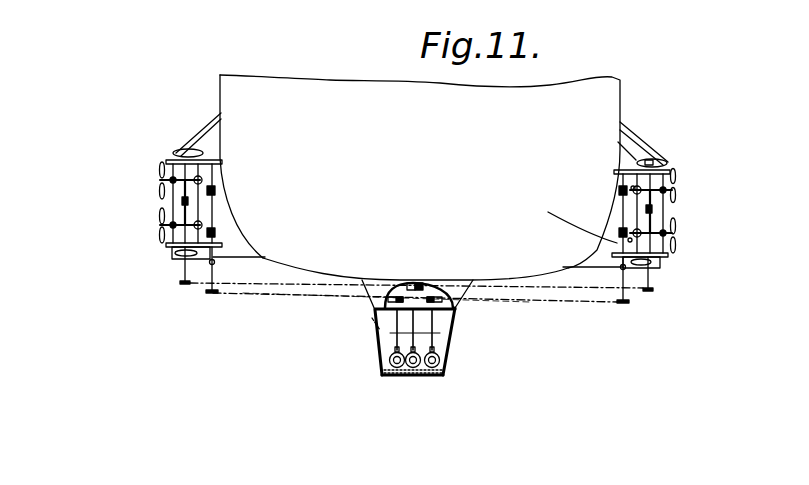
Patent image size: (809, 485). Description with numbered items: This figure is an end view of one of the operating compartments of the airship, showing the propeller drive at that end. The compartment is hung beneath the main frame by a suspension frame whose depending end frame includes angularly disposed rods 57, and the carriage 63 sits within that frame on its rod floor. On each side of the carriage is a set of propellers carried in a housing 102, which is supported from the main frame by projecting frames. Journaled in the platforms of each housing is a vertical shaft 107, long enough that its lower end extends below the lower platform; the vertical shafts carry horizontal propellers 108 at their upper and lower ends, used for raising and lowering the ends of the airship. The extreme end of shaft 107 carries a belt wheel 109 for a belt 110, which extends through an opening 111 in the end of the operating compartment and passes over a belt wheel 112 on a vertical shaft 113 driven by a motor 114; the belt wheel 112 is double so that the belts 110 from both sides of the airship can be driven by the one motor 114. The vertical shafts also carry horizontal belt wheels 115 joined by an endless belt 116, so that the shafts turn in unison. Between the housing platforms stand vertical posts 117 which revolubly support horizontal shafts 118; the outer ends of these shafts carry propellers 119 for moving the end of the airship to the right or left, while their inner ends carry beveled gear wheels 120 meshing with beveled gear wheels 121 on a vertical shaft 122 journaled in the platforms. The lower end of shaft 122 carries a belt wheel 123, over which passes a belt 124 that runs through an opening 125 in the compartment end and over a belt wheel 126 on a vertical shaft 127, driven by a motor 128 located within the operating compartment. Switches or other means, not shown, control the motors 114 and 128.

The angularly disposed rods 57 is at (372, 318).
The carriage 63 is at (393, 330).
The housing 102 is at (633, 160).
The vertical shaft 107 is at (180, 263).
The horizontal propellers 108 is at (173, 152).
The belt wheel 109 is at (182, 282).
The belt 110 is at (230, 287).
The opening 111 is at (427, 283).
The belt wheel 112 is at (410, 283).
The vertical shaft 113 is at (433, 327).
The motor 114 is at (447, 402).
The horizontal belt wheels 115 is at (166, 224).
The endless belt 116 is at (166, 237).
The vertical posts 117 is at (168, 200).
The horizontal shafts 118 is at (170, 180).
The propellers 119 is at (160, 165).
The beveled gear wheels 120 is at (633, 188).
The beveled gear wheels 121 is at (632, 197).
The vertical shaft 122 is at (207, 275).
The belt wheel 123 is at (213, 292).
The belt 124 is at (243, 292).
The opening 125 is at (453, 297).
The belt wheel 126 is at (463, 298).
The vertical shaft 127 is at (432, 335).
The motor 128 is at (443, 363).